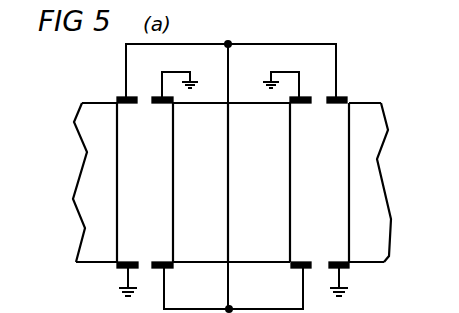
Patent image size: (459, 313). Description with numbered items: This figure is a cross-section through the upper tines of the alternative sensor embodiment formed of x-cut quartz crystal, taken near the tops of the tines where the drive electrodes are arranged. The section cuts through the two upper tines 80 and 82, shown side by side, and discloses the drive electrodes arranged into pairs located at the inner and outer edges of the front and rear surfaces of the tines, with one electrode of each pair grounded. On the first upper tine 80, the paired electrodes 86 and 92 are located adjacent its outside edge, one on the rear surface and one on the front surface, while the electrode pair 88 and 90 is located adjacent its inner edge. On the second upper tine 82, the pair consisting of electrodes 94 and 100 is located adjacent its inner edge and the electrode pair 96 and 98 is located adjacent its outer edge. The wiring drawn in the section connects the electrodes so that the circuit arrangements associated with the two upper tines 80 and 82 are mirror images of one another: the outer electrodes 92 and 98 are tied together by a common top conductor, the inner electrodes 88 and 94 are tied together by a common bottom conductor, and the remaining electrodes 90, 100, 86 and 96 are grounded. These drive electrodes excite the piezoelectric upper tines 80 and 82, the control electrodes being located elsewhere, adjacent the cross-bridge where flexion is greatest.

The upper tine 80 is at (145, 182).
The upper tine 82 is at (319, 182).
The drive electrode 86 is at (118, 267).
The drive electrode 88 is at (166, 268).
The drive electrode 90 is at (175, 100).
The drive electrode 92 is at (117, 98).
The drive electrode 94 is at (293, 268).
The drive electrode 96 is at (345, 268).
The drive electrode 98 is at (347, 98).
The drive electrode 100 is at (290, 96).